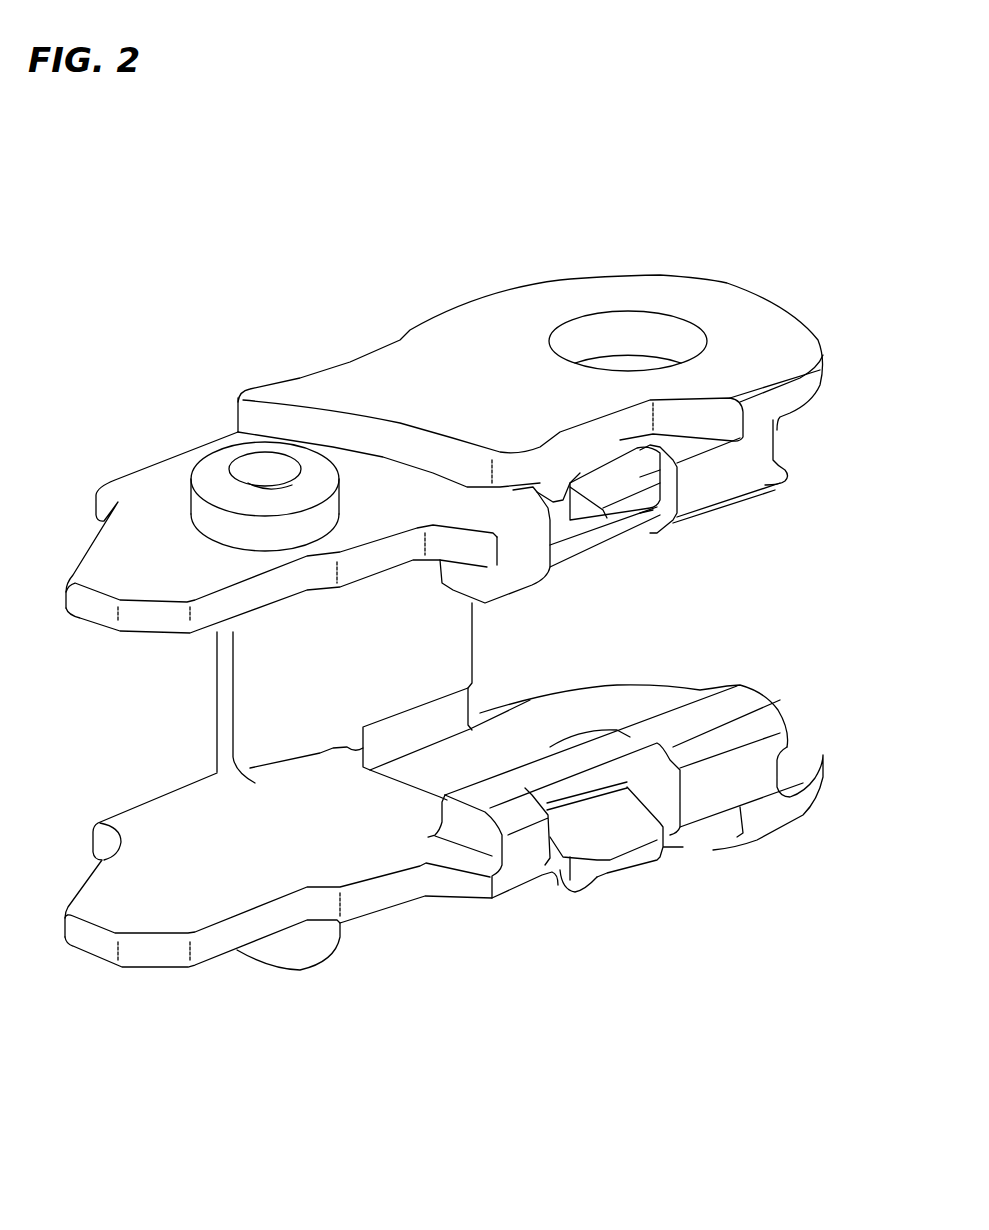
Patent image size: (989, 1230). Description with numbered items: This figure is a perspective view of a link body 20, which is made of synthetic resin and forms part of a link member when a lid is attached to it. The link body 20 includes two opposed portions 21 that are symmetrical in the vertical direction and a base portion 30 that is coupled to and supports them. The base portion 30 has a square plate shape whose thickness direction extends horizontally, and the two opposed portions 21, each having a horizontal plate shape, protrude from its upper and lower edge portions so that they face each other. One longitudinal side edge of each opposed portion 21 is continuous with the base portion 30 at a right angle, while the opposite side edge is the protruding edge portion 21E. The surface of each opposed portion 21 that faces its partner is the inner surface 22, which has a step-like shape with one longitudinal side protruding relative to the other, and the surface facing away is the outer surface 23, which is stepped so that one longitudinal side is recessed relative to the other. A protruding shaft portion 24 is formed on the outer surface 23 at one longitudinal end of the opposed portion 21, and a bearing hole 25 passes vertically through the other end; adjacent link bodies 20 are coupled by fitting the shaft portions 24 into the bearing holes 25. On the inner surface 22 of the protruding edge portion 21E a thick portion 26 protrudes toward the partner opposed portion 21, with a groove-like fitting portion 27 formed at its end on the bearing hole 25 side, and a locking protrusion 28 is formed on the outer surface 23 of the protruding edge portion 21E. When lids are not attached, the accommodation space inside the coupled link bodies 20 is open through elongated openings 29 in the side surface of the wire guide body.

The link body 20 is at (228, 315).
The opposed portion 21 is at (463, 340).
The protruding edge portion 21E is at (763, 428).
The inner surface 22 is at (120, 910).
The outer surface 23 is at (145, 500).
The shaft portion 24 is at (212, 473).
The bearing hole 25 is at (622, 330).
The thick portion 26 is at (520, 550).
The fitting portion 27 is at (777, 767).
The locking protrusion 28 is at (600, 467).
The opening 29 is at (620, 747).
The base portion 30 is at (262, 668).